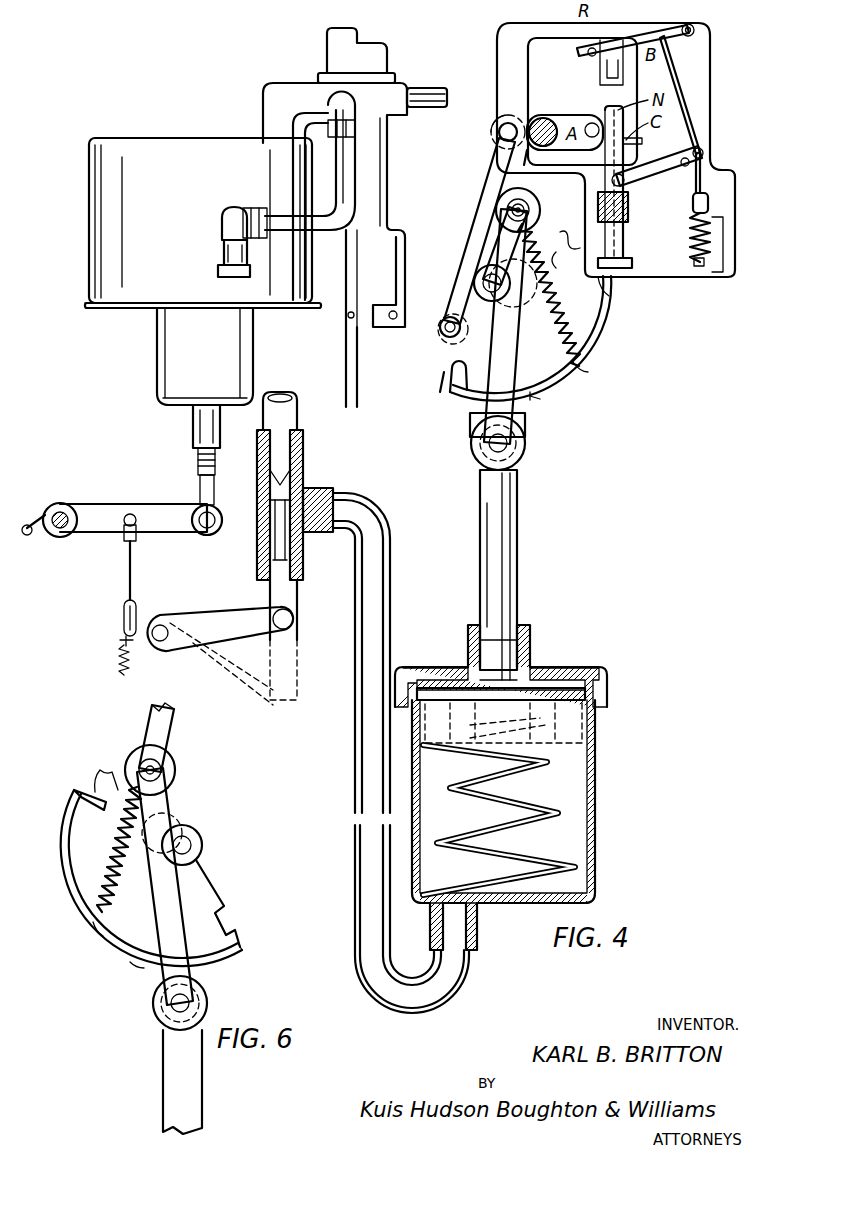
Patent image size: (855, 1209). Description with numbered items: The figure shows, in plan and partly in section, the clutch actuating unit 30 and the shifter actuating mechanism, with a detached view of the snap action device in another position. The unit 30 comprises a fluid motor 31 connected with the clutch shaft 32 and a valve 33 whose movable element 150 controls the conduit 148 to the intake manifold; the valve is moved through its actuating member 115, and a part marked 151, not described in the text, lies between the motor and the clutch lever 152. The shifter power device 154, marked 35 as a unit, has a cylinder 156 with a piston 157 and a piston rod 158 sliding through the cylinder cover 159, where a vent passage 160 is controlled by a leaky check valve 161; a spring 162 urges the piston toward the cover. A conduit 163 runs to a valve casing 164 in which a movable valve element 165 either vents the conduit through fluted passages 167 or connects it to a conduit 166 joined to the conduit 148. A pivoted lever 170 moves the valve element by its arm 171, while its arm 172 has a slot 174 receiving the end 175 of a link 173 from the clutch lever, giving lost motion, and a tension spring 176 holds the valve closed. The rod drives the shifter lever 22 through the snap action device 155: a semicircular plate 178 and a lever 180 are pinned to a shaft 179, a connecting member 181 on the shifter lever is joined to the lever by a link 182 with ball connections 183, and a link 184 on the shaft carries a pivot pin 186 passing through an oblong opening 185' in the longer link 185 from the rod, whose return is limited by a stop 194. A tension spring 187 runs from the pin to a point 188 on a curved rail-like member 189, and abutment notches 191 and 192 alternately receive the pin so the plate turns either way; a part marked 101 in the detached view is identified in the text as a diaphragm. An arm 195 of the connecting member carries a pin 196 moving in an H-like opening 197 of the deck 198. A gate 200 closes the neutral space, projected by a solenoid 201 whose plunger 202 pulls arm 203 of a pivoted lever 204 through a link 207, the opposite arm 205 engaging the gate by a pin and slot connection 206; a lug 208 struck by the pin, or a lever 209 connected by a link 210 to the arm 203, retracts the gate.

In FIG. 4, the clutch actuating unit 30 is at (183, 130).
In FIG. 4, the fluid motor 31 is at (88, 243).
In FIG. 4, the valve 33 is at (392, 105).
In FIG. 4, the conduit 148 is at (428, 88).
In FIG. 4, the movable element 150 is at (357, 256).
In FIG. 4, the actuating member 115 is at (346, 348).
In FIG. 4, the nipple 151 is at (193, 430).
In FIG. 4, the clutch lever 152 is at (170, 532).
In FIG. 4, the clutch shaft 32 is at (60, 537).
In FIG. 4, the link 173 is at (130, 562).
In FIG. 4, the slot 174 is at (124, 616).
In FIG. 4, the end of link 175 is at (120, 638).
In FIG. 4, the tension spring 176 is at (118, 660).
In FIG. 4, the arm 172 is at (162, 651).
In FIG. 4, the pivoted lever 170 is at (200, 615).
In FIG. 4, the arm 171 is at (295, 618).
In FIG. 4, the fluted passages 167 is at (270, 550).
In FIG. 4, the valve casing 164 is at (303, 476).
In FIG. 4, the valve element 165 is at (297, 595).
In FIG. 4, the conduit 166 is at (297, 404).
In FIG. 4, the conduit 163 is at (355, 745).
In FIG. 4, the cylinder assembly 35 is at (468, 573).
In FIG. 4, the piston rod 158 is at (517, 575).
In FIG. 6, the piston rod 158 is at (163, 1063).
In FIG. 4, the leaky check valve 161 is at (555, 660).
In FIG. 4, the cylinder cover 159 is at (565, 667).
In FIG. 4, the vent passage 160 is at (528, 725).
In FIG. 4, the piston 157 is at (595, 720).
In FIG. 4, the power device 154 is at (597, 755).
In FIG. 4, the spring 162 is at (527, 772).
In FIG. 4, the cylinder 156 is at (597, 820).
In FIG. 4, the stop 194 is at (525, 425).
In FIG. 4, the semicircular plate 178 is at (543, 396).
In FIG. 6, the semicircular plate 178 is at (195, 858).
In FIG. 4, the link 185 is at (519, 326).
In FIG. 6, the link 185 is at (191, 875).
In FIG. 4, the point 188 is at (588, 368).
In FIG. 6, the point 188 is at (88, 940).
In FIG. 4, the snap action device 155 is at (656, 332).
In FIG. 6, the snap action device 155 is at (64, 912).
In FIG. 4, the curved rail-like member 189 is at (614, 303).
In FIG. 6, the curved rail-like member 189 is at (130, 968).
In FIG. 4, the tension spring 187 is at (565, 312).
In FIG. 6, the tension spring 187 is at (108, 862).
In FIG. 4, the abutment notch 191 is at (436, 360).
In FIG. 4, the ball connections 183 is at (498, 132).
In FIG. 4, the lever 180 is at (474, 283).
In FIG. 4, the shaft 179 is at (480, 272).
In FIG. 4, the link 184 is at (496, 246).
In FIG. 4, the link 182 is at (486, 190).
In FIG. 6, the link 182 is at (163, 722).
In FIG. 4, the pivot pin 186 is at (540, 205).
In FIG. 4, the abutment notch 192 is at (568, 228).
In FIG. 6, the abutment notch 192 is at (230, 918).
In FIG. 4, the oblong opening 185' is at (544, 162).
In FIG. 4, the pin 196 is at (600, 185).
In FIG. 4, the shifter lever 22 is at (545, 118).
In FIG. 4, the connecting member 181 is at (570, 126).
In FIG. 4, the arm 195 is at (598, 65).
In FIG. 4, the H-like opening 197 is at (640, 110).
In FIG. 4, the lug 208 is at (642, 140).
In FIG. 4, the gate 200 is at (628, 168).
In FIG. 4, the arm 203 is at (703, 153).
In FIG. 4, the link 207 is at (703, 170).
In FIG. 4, the plunger 202 is at (716, 198).
In FIG. 4, the arm 205 is at (626, 184).
In FIG. 4, the pin and slot connection 206 is at (666, 185).
In FIG. 4, the pivoted lever 204 is at (692, 212).
In FIG. 4, the solenoid 201 is at (692, 245).
In FIG. 4, the deck 198 is at (706, 80).
In FIG. 4, the lever 209 is at (624, 44).
In FIG. 4, the link 210 is at (690, 58).
In FIG. 6, the diaphragm 101 is at (104, 762).